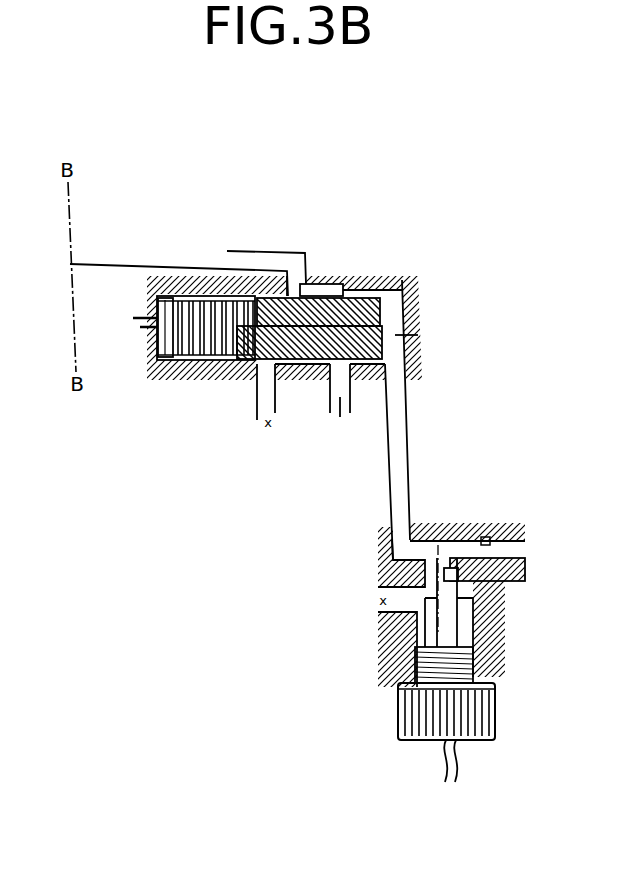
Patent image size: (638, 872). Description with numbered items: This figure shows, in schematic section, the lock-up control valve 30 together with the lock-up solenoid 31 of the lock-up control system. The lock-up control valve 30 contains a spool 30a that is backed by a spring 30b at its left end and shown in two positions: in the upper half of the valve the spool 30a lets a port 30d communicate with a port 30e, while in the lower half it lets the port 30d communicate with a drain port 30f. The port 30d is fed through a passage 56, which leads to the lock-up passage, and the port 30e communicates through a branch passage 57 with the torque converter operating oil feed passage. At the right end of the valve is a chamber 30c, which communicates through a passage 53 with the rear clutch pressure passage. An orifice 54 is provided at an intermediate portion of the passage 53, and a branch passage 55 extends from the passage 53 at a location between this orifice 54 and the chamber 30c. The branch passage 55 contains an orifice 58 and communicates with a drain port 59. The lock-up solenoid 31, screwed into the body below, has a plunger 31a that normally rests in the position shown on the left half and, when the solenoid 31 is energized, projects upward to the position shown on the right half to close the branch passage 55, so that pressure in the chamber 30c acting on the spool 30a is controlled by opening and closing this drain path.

The lock-up control valve 30 is at (373, 262).
The spool 30a is at (232, 362).
The spring 30b is at (153, 347).
The chamber 30c is at (405, 336).
The port 30d is at (297, 277).
The port 30e is at (340, 369).
The drain port 30f is at (263, 379).
The lock-up solenoid 31 is at (399, 728).
The plunger 31a is at (460, 599).
The passage 53 is at (410, 471).
The orifice 54 is at (486, 538).
The branch passage 55 is at (526, 567).
The passage 56 is at (172, 264).
The branch passage 57 is at (351, 405).
The orifice 58 is at (458, 576).
The drain port 59 is at (386, 621).